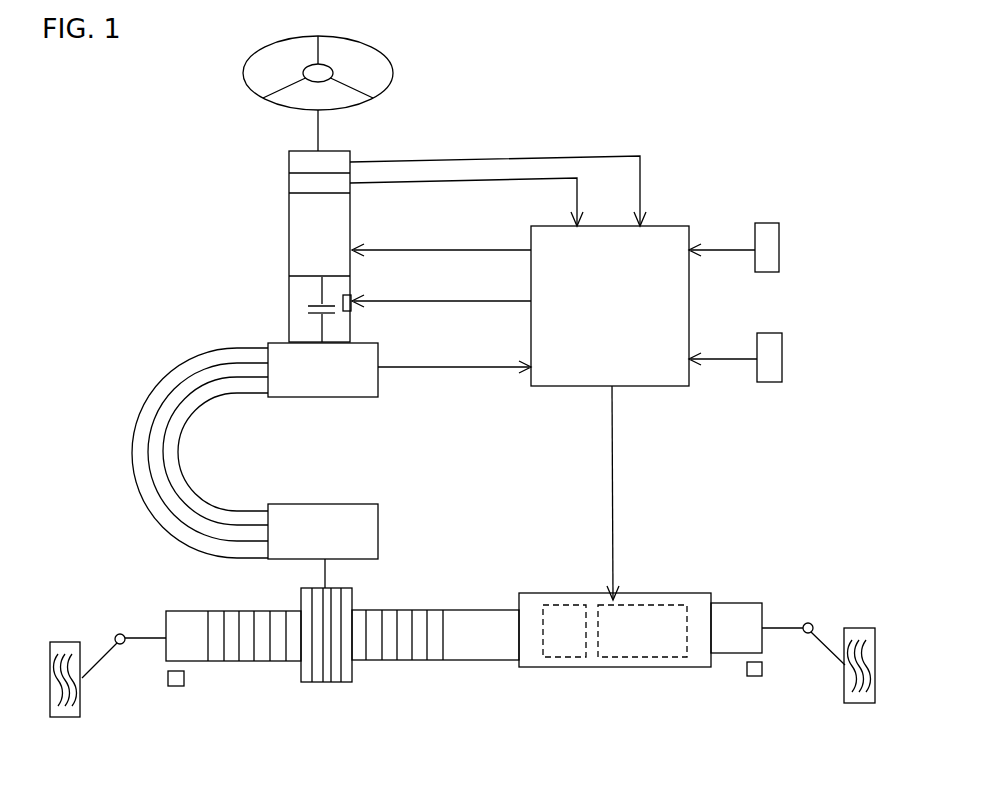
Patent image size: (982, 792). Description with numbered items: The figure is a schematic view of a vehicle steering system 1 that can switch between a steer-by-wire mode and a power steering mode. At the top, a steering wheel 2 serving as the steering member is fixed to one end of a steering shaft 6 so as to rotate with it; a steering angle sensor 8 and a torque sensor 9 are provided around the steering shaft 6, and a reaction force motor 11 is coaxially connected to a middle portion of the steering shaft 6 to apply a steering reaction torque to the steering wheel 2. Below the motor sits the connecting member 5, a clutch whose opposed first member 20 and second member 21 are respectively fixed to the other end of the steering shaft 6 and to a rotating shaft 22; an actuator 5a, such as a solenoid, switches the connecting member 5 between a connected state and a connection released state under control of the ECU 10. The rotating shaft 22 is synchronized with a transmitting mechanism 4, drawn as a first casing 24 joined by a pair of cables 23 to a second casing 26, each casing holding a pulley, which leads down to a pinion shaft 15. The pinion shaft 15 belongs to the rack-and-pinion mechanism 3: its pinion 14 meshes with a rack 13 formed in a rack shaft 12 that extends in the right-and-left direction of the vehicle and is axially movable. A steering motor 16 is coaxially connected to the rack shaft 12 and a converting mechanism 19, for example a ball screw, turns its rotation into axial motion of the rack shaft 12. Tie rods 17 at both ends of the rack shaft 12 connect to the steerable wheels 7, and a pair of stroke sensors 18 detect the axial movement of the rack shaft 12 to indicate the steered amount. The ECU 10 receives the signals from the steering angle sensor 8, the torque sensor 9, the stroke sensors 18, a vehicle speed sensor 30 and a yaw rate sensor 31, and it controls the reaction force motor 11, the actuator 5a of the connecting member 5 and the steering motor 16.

The vehicle steering system 1 is at (574, 110).
The steering wheel 2 is at (394, 72).
The rack-and-pinion mechanism 3 is at (712, 512).
The transmitting mechanism 4 is at (412, 448).
The connecting member 5 is at (225, 281).
The actuator 5a is at (352, 292).
The steering shaft 6 is at (318, 125).
The steerable wheels 7 is at (66, 642).
The steering angle sensor 8 is at (297, 162).
The torque sensor 9 is at (297, 184).
The ECU 10 is at (665, 232).
The reaction force motor 11 is at (298, 242).
The rack shaft 12 is at (488, 664).
The rack 13 is at (392, 658).
The pinion 14 is at (328, 668).
The pinion shaft 15 is at (325, 580).
The steering motor 16 is at (657, 657).
The tie rods 17 is at (100, 663).
The stroke sensors 18 is at (176, 686).
The converting mechanism 19 is at (575, 657).
The first member 20 is at (312, 305).
The second member 21 is at (310, 314).
The rotating shaft 22 is at (314, 342).
The cables 23 is at (163, 392).
The first casing 24 is at (346, 383).
The second casing 26 is at (378, 531).
The vehicle speed sensor 30 is at (779, 243).
The yaw rate sensor 31 is at (782, 353).